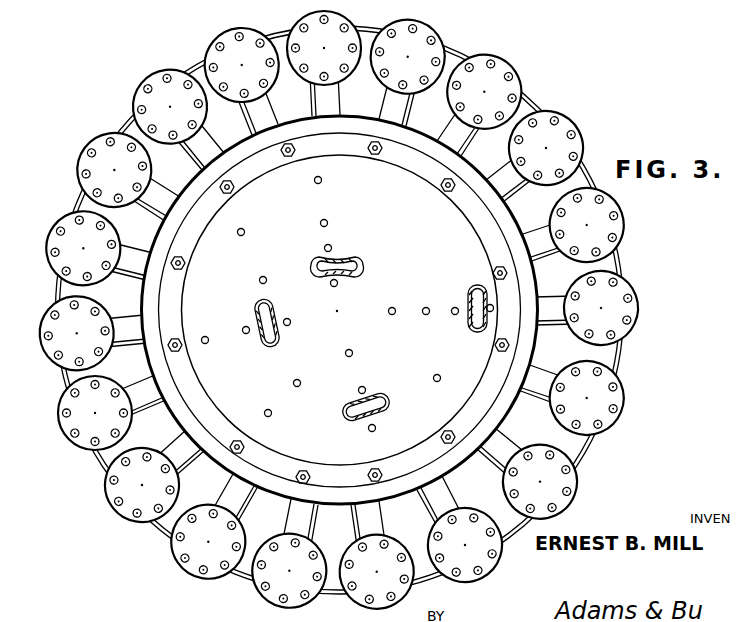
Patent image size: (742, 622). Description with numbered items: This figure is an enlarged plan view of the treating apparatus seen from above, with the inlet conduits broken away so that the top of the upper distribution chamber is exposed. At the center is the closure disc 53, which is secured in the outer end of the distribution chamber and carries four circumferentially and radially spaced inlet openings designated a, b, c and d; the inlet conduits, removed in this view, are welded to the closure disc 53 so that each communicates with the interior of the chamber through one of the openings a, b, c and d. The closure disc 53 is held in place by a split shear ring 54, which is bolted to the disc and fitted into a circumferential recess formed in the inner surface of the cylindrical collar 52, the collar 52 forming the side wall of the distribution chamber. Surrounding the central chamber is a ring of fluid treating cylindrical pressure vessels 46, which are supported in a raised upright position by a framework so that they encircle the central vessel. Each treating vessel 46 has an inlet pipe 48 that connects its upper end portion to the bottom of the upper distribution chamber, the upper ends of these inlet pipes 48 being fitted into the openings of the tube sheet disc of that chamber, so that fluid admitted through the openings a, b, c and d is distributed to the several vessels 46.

The fluid treating cylindrical pressure vessels 46 is at (519, 84).
The inlet pipe 48 is at (453, 127).
The cylindrical collar 52 is at (518, 283).
The closure disc 53 is at (366, 216).
The split shear ring 54 is at (408, 162).
The inlet opening a is at (472, 290).
The inlet opening b is at (383, 401).
The inlet opening c is at (273, 296).
The inlet opening d is at (369, 246).